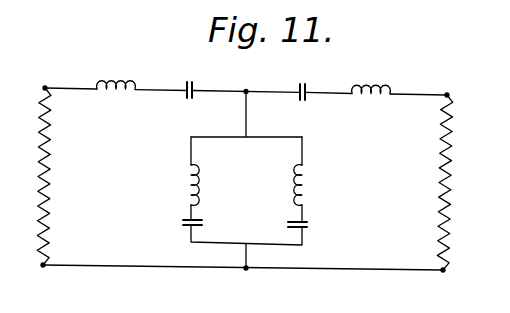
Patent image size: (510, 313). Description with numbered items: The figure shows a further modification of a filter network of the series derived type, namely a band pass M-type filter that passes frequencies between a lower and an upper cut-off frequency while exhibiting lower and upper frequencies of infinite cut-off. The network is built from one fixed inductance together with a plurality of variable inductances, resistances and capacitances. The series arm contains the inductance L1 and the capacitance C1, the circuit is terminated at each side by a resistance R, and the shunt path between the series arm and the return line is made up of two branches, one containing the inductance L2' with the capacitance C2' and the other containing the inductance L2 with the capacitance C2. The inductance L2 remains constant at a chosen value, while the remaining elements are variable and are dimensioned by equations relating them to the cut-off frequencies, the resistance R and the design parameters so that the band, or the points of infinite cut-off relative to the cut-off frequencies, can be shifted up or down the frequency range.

The series inductance L1 is at (108, 69).
The series capacitance C1 is at (318, 77).
The resistance R is at (25, 195).
The shunt inductance L2' is at (174, 185).
The shunt capacitance C2' is at (174, 223).
The shunt inductance L2 is at (316, 185).
The shunt capacitance C2 is at (312, 226).